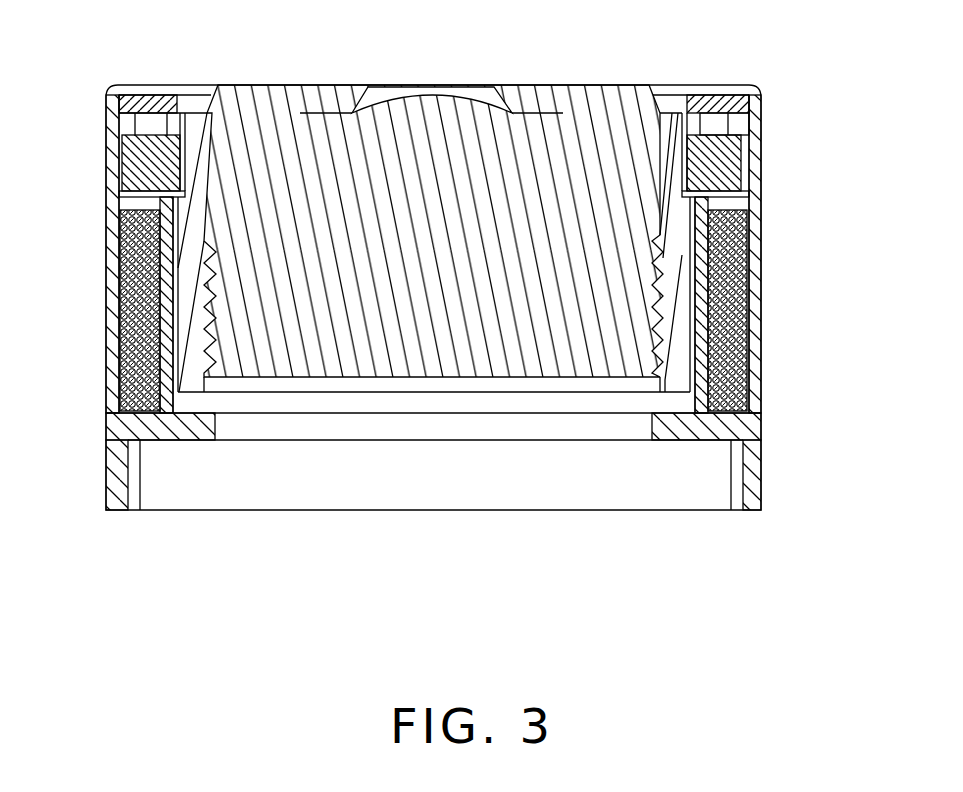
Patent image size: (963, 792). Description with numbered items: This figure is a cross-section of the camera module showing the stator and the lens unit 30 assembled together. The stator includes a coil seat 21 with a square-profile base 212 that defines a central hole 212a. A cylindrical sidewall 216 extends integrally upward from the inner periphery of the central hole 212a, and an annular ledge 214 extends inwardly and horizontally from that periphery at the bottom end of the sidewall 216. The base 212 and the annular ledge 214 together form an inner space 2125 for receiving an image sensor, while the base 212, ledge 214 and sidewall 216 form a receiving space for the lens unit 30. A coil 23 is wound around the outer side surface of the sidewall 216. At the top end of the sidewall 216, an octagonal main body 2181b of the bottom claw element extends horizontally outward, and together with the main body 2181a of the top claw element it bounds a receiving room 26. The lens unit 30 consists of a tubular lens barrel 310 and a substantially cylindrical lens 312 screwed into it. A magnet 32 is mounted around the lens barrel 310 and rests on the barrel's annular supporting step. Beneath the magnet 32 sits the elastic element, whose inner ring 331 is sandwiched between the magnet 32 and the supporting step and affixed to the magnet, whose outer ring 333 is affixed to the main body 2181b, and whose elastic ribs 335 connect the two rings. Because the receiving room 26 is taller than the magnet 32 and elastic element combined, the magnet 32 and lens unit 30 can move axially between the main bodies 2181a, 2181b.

The coil seat 21 is at (838, 328).
The base 212 is at (753, 471).
The inner space 2125 is at (510, 480).
The central hole 212a is at (590, 425).
The annular ledge 214 is at (683, 425).
The cylindrical sidewall 216 is at (700, 350).
The main body 2181a is at (708, 100).
The main body 2181b is at (733, 195).
The coil 23 is at (733, 232).
The receiving room 26 is at (738, 118).
The lens unit 30 is at (352, 573).
The lens barrel 310 is at (191, 396).
The lens 312 is at (300, 335).
The magnet 32 is at (723, 163).
The inner ring 331 is at (122, 228).
The outer ring 333 is at (161, 211).
The elastic ribs 335 is at (166, 203).